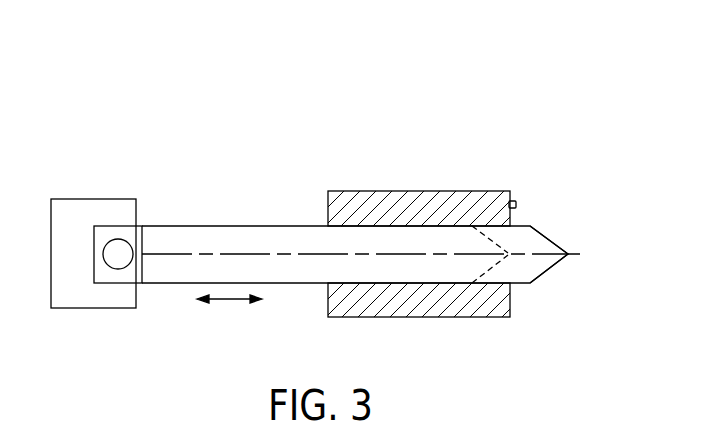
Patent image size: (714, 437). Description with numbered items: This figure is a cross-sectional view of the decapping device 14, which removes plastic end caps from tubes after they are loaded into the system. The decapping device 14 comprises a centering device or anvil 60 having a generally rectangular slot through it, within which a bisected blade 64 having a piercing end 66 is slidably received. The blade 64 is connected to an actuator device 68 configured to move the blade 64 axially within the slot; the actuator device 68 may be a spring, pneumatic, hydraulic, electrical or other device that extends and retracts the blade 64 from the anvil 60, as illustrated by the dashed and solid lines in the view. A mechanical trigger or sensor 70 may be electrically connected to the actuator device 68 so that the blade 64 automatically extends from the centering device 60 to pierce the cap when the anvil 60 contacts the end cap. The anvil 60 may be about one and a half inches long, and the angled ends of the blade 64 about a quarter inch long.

The decapping device 14 is at (392, 103).
The centering device or anvil 60 is at (415, 207).
The bisected blade 64 is at (165, 238).
The piercing end 66 is at (570, 252).
The actuator device 68 is at (67, 213).
The mechanical trigger or sensor 70 is at (515, 199).